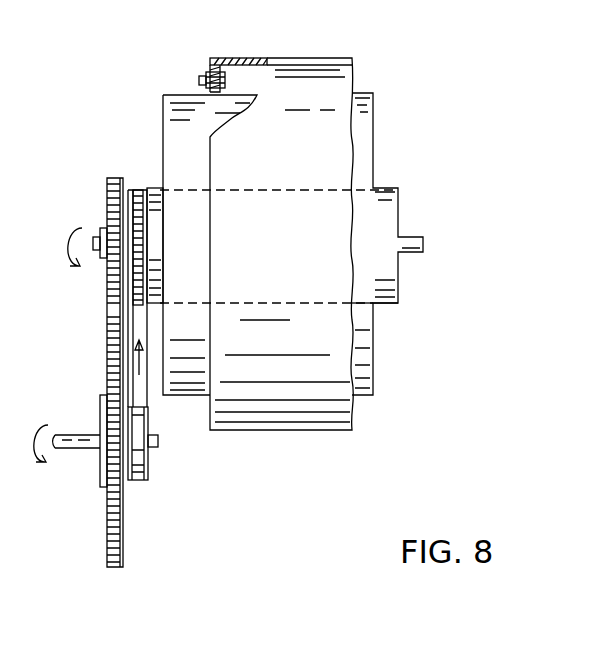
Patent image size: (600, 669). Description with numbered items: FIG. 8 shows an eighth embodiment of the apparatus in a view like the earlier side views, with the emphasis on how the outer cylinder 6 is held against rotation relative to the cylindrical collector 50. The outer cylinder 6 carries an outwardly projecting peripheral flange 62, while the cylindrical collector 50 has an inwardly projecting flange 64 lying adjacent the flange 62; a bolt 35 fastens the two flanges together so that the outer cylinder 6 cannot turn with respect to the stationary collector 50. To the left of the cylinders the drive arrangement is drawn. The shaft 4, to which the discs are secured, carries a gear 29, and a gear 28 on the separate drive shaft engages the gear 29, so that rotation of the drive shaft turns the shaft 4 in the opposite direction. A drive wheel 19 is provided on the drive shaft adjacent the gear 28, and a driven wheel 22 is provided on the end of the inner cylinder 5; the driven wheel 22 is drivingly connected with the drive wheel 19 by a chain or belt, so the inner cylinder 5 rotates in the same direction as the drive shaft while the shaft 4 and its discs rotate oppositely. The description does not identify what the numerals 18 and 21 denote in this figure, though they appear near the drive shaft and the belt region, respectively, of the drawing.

The shaft 4 is at (93, 252).
The inner cylinder 5 is at (150, 188).
The outer cylinder 6 is at (163, 93).
The shaft 18 is at (78, 450).
The drive wheel 19 is at (150, 467).
The cover plate 21 is at (140, 320).
The driven wheel 22 is at (128, 190).
The gear 28 is at (110, 533).
The gear 29 is at (109, 196).
The bolt 35 is at (200, 78).
The cylindrical collector 50 is at (258, 59).
The outwardly projecting peripheral flange 62 is at (222, 92).
The inwardly projecting flange 64 is at (212, 72).